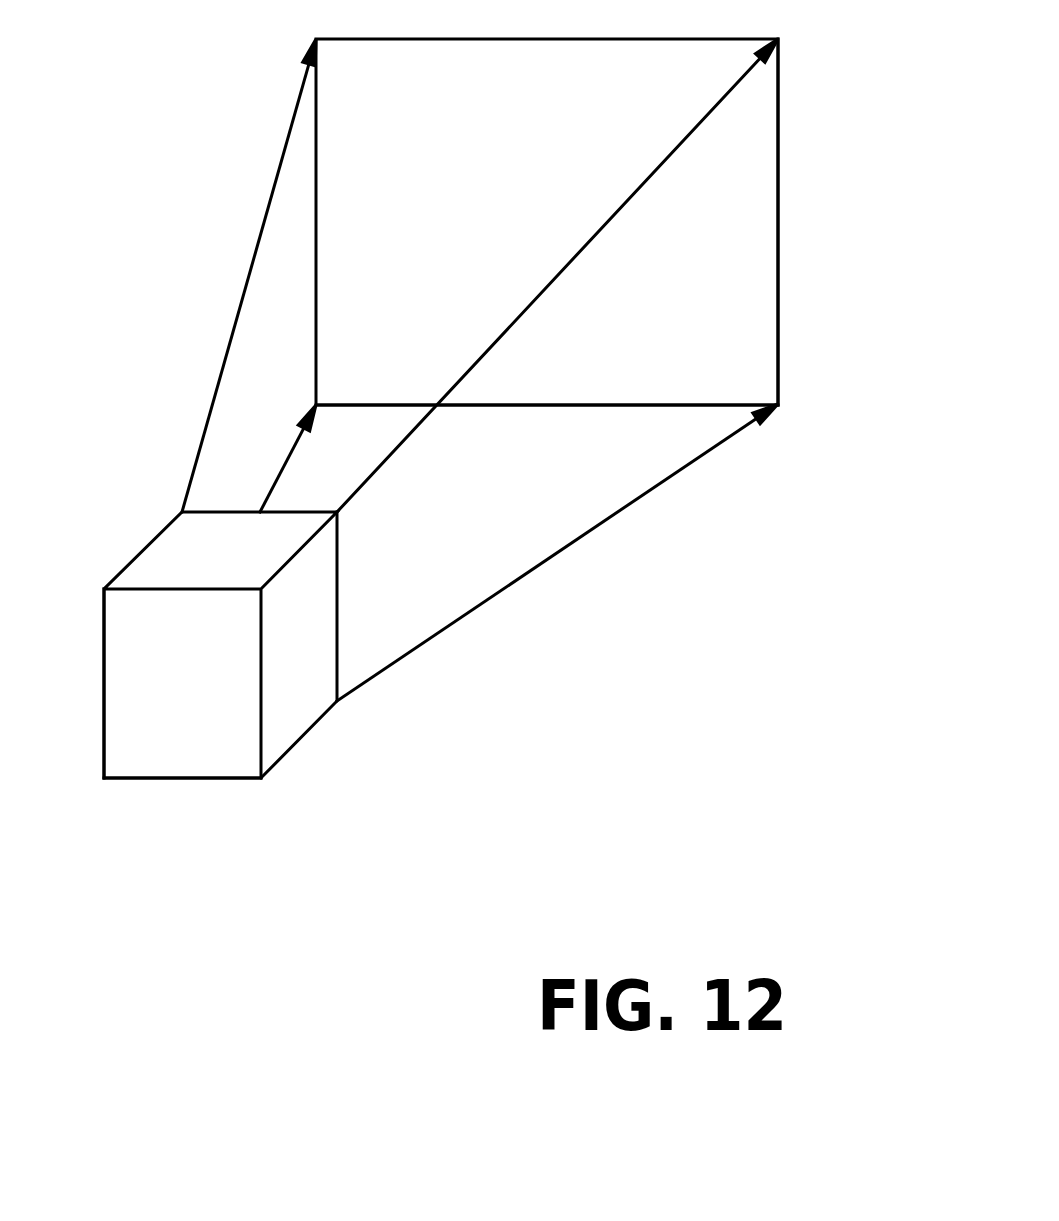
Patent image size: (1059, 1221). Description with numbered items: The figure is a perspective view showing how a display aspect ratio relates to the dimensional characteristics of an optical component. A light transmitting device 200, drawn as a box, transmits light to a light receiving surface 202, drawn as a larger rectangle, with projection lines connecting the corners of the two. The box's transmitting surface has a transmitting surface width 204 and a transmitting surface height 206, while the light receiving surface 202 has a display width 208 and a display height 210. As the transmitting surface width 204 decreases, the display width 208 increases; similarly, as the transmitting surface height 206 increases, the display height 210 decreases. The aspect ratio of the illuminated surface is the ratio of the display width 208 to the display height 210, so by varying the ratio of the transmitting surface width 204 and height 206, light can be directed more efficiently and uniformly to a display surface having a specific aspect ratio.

The light transmitting device 200 is at (307, 700).
The light receiving surface 202 is at (710, 312).
The transmitting surface width 204 is at (177, 778).
The transmitting surface height 206 is at (104, 722).
The display width 208 is at (517, 405).
The display height 210 is at (778, 173).